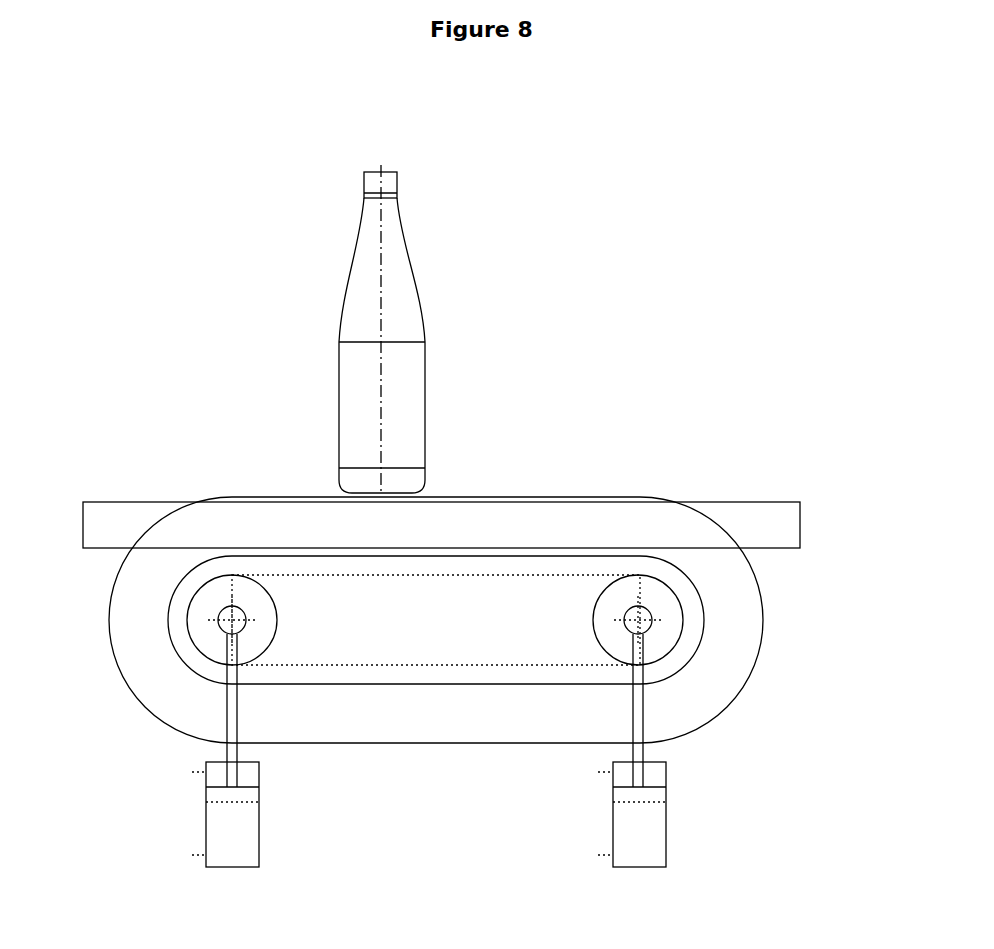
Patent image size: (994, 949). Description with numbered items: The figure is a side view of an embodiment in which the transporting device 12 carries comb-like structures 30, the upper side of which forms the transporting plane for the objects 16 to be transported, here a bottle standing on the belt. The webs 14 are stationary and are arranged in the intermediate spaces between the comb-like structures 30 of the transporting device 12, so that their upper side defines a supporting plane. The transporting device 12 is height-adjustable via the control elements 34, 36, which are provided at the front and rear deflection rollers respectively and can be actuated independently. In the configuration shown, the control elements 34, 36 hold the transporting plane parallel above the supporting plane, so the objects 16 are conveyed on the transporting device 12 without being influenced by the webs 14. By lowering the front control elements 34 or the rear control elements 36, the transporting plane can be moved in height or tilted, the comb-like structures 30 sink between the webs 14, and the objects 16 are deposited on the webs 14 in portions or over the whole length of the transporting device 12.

The object 16 is at (435, 285).
The web 14 is at (770, 528).
The comb-like structure 30 is at (722, 673).
The transporting device 12 is at (388, 685).
The control element 34 is at (666, 857).
The control element 36 is at (256, 857).